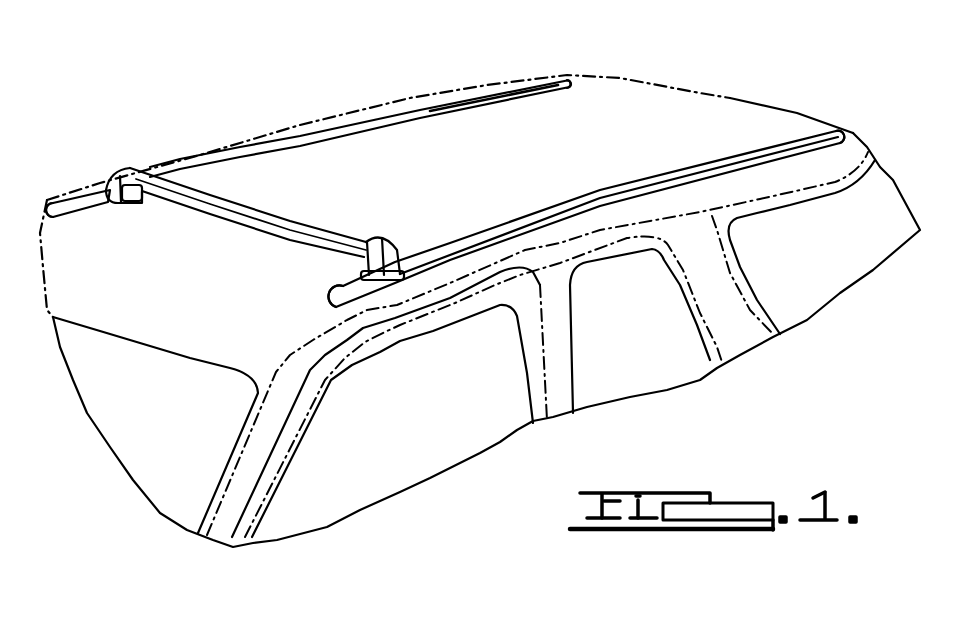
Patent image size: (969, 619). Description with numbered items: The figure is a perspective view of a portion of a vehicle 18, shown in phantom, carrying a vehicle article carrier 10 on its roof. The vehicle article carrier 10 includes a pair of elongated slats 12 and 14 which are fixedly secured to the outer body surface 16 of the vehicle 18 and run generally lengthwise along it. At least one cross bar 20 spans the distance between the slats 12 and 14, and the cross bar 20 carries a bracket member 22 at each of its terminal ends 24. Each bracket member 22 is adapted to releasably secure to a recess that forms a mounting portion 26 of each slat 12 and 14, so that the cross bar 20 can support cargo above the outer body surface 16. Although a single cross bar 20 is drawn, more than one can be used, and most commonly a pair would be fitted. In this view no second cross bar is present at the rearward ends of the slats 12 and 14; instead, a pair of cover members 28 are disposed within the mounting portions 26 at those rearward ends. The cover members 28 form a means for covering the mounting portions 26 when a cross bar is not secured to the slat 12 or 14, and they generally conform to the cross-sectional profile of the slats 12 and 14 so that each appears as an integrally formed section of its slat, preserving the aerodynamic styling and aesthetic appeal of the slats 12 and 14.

The vehicle article carrier 10 is at (445, 161).
The elongated slat 12 is at (602, 197).
The elongated slat 14 is at (408, 112).
The outer body surface 16 is at (631, 104).
The vehicle 18 is at (137, 313).
The cross bar 20 is at (288, 216).
The bracket member 22 is at (128, 193).
The terminal end 24 is at (150, 170).
The mounting portion 26 is at (340, 288).
The cover member 28 is at (520, 86).